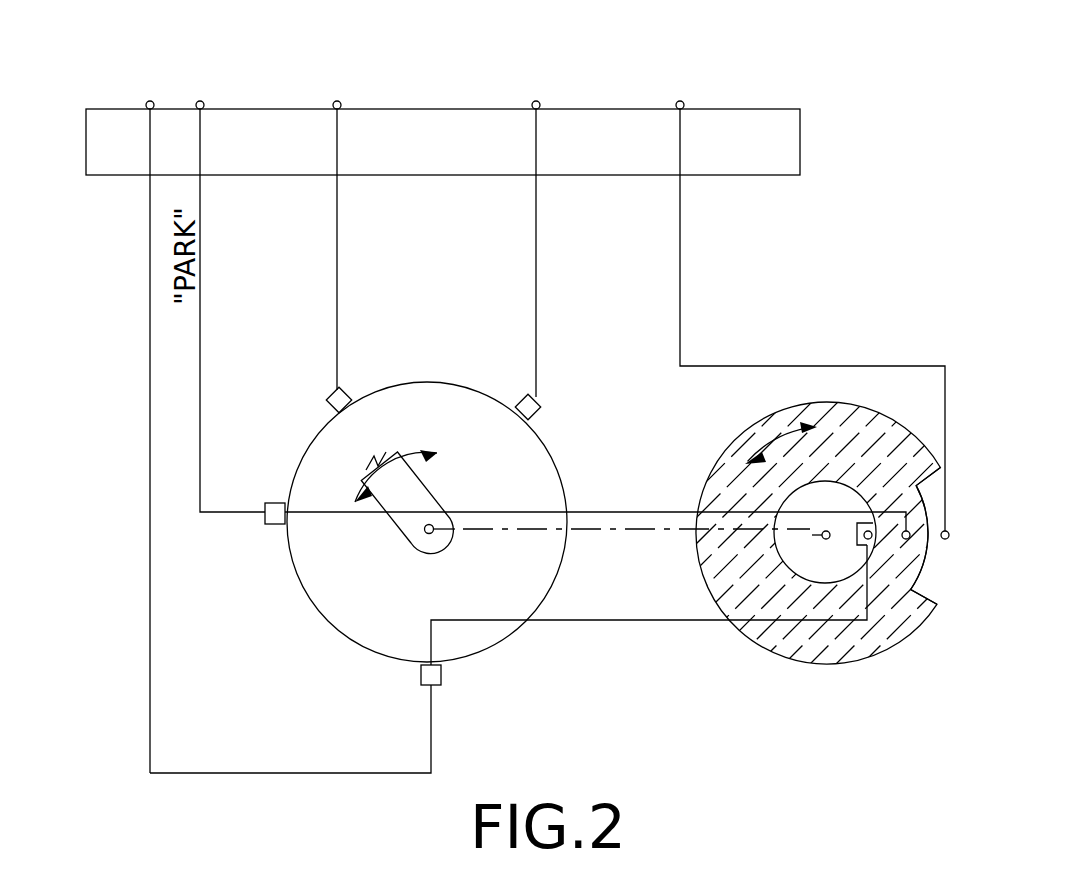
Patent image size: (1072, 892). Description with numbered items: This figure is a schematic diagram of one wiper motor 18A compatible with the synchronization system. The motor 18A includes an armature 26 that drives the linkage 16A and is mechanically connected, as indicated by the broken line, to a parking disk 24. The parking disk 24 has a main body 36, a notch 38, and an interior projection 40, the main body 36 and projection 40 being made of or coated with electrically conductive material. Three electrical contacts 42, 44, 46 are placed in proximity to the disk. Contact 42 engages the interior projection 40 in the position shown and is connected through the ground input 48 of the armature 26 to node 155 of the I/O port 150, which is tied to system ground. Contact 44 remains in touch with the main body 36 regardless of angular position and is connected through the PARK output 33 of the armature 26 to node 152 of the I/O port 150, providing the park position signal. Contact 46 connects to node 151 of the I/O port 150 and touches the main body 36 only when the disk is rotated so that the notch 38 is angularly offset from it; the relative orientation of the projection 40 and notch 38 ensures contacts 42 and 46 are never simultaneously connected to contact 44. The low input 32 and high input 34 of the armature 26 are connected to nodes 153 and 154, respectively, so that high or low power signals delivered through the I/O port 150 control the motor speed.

The I/O port 150 is at (767, 143).
The node of I/O port 151 is at (683, 102).
The node of I/O port 152 is at (204, 102).
The node of I/O port 153 is at (341, 102).
The node of I/O port 154 is at (539, 102).
The node of I/O port 155 is at (152, 101).
The armature 26 is at (342, 580).
The high input 34 is at (348, 390).
The low input 32 is at (518, 395).
The PARK output 33 is at (270, 500).
The ground input 48 is at (442, 678).
The linkage 16A is at (407, 543).
The motor 18A is at (300, 788).
The parking disk 24 is at (741, 544).
The main body 36 is at (873, 417).
The notch 38 is at (926, 587).
The interior projection 40 is at (868, 527).
The contact 42 is at (860, 547).
The contact 44 is at (912, 540).
The contact 46 is at (949, 536).